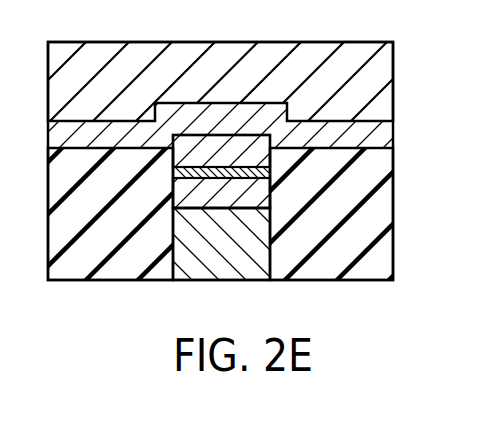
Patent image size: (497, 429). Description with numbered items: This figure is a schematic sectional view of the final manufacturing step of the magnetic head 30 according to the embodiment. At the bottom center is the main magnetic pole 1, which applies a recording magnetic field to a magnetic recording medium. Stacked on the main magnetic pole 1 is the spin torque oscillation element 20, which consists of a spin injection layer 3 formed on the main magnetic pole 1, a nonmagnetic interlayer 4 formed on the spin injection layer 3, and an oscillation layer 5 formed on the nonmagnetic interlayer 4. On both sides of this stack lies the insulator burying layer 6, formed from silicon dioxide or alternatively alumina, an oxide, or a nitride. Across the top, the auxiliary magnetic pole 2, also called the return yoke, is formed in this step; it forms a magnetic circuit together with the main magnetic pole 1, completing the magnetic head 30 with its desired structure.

The main magnetic pole 1 is at (229, 266).
The auxiliary magnetic pole 2 is at (372, 63).
The spin injection layer 3 is at (272, 192).
The nonmagnetic interlayer 4 is at (272, 172).
The oscillation layer 5 is at (272, 153).
The insulator burying layer 6 is at (388, 254).
The spin torque oscillation element 20 is at (437, 135).
The magnetic head 30 is at (416, 94).